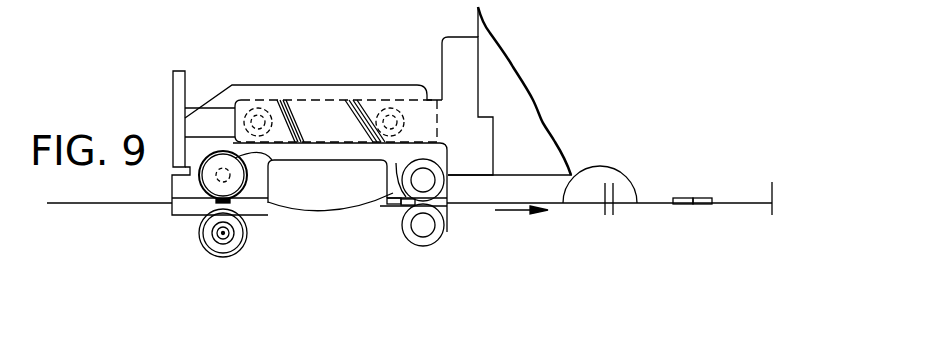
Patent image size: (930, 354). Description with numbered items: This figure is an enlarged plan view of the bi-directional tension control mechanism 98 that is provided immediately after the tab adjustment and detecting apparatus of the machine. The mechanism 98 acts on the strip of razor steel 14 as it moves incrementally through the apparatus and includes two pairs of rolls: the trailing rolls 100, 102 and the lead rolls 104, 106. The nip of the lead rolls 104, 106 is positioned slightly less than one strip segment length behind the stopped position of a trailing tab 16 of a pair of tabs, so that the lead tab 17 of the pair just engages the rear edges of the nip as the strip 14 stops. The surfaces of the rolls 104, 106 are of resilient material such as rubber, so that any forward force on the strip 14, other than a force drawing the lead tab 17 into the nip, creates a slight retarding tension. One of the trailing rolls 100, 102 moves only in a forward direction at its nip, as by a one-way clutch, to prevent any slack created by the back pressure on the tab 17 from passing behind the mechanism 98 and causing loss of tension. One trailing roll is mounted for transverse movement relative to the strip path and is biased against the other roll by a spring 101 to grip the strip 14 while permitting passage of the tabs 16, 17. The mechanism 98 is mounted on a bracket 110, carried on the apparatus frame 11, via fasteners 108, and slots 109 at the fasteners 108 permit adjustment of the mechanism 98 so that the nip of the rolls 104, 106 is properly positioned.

The apparatus frame 11 is at (512, 96).
The strip razor steel 14 is at (409, 189).
The trailing tab 16 is at (388, 212).
The lead tab 17 is at (712, 183).
The bi-directional tension control mechanism 98 is at (325, 82).
The trailing roll 100 is at (237, 166).
The spring 101 is at (246, 174).
The trailing roll 102 is at (248, 233).
The lead roll 104 is at (440, 165).
The lead roll 106 is at (447, 228).
The fasteners 108 is at (248, 100).
The slots 109 is at (278, 117).
The bracket 110 is at (470, 70).